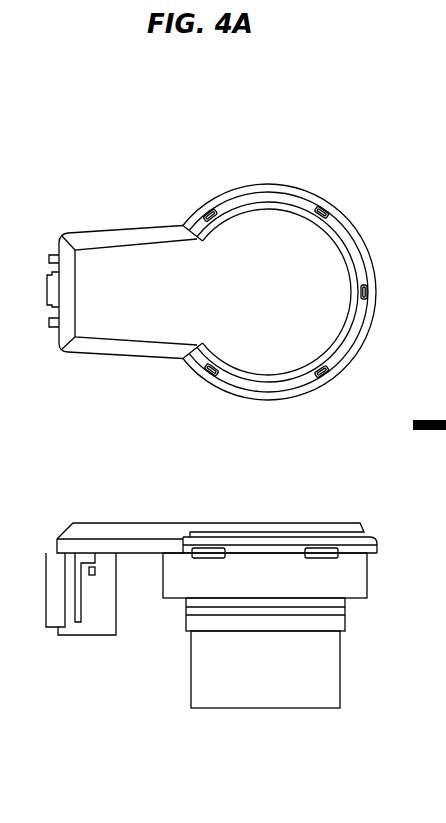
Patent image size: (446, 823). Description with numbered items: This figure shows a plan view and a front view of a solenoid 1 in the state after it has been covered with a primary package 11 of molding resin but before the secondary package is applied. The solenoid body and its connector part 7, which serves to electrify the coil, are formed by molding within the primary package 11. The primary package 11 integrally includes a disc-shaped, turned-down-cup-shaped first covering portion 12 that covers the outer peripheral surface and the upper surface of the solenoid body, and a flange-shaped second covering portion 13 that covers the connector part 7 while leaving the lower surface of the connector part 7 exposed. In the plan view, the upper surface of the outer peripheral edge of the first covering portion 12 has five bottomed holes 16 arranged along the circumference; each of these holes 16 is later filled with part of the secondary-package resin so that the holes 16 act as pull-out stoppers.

The solenoid 1 is at (70, 217).
The connector part 7 is at (90, 622).
The primary package 11 is at (195, 265).
The first covering portion 12 is at (272, 250).
The second covering portion 13 is at (137, 293).
The bottomed holes 16 is at (208, 211).